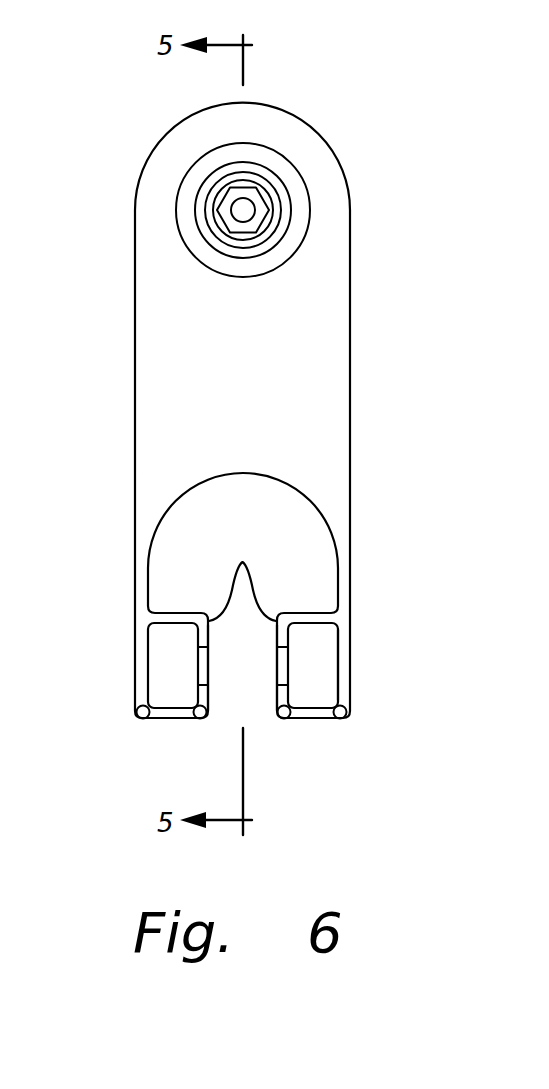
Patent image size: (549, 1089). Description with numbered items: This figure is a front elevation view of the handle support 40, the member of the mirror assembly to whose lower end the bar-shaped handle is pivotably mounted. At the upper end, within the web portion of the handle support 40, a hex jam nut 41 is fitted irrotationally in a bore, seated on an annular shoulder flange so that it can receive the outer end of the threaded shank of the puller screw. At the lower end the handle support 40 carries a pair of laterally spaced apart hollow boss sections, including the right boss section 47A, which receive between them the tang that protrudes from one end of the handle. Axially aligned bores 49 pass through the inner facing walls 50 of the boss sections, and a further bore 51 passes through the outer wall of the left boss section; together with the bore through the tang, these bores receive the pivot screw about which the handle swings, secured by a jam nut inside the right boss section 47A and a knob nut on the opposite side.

The handle support 40 is at (323, 140).
The hex jam nut 41 is at (222, 198).
The right boss section 47A is at (153, 723).
The axially aligned bores 49 is at (212, 692).
The inner facing walls 50 is at (244, 558).
The bore through the outer wall of left boss section 51 is at (338, 688).